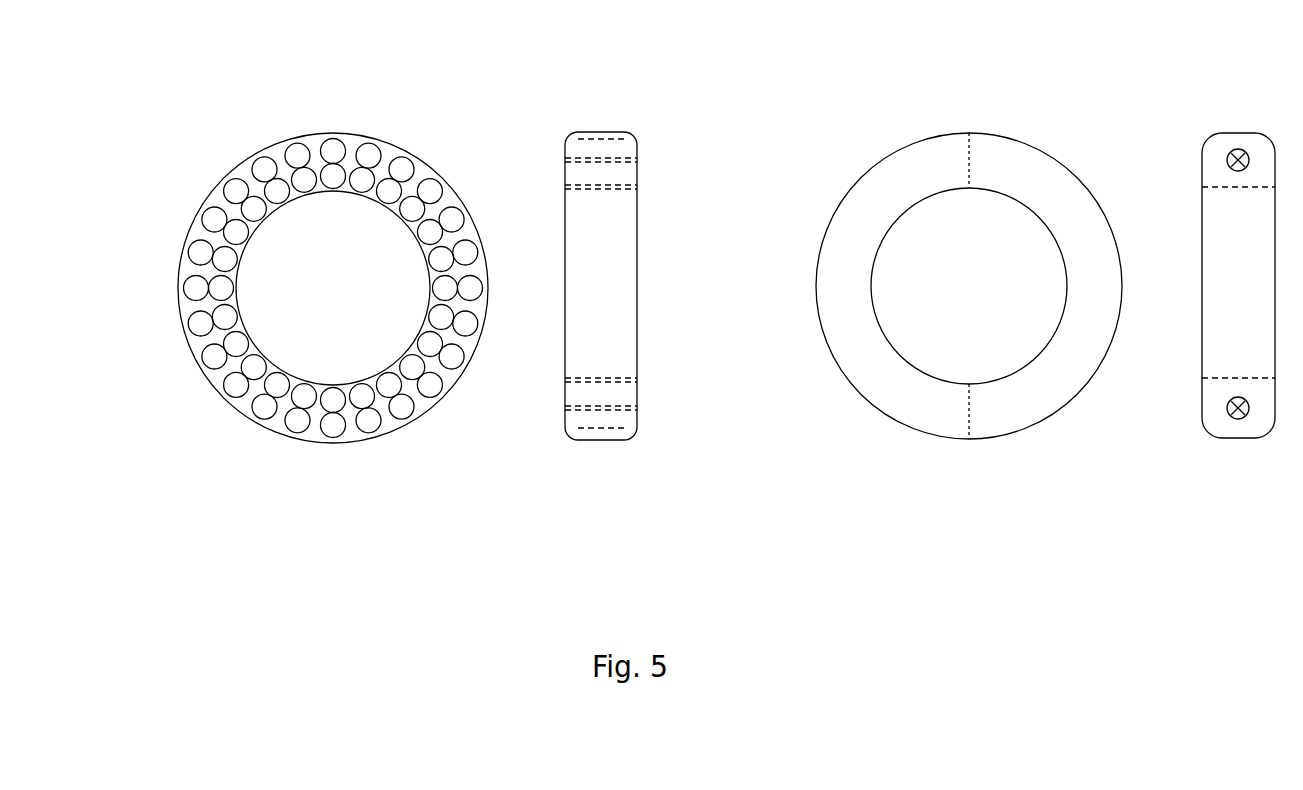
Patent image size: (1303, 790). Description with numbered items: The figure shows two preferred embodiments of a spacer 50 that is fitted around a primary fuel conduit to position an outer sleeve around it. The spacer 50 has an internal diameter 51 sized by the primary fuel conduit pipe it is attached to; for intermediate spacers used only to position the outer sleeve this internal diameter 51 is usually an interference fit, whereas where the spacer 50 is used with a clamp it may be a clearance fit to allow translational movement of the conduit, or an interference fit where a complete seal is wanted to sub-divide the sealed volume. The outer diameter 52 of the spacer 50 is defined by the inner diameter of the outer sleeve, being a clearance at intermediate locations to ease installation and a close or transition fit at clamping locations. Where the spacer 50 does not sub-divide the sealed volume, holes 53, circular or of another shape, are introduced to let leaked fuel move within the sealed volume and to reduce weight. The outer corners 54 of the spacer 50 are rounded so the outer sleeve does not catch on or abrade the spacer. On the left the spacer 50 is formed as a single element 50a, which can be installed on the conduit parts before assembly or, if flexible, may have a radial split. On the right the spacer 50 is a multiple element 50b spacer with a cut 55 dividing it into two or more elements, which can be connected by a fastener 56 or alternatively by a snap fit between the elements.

The spacer 50 is at (160, 160).
The single element spacer 50a is at (350, 146).
The multiple element spacer 50b is at (932, 143).
The internal diameter 51 is at (242, 268).
The outer diameter 52 is at (187, 340).
The holes 53 is at (260, 407).
The outer corners 54 is at (632, 140).
The cut 55 is at (965, 408).
The fastener 56 is at (1228, 157).